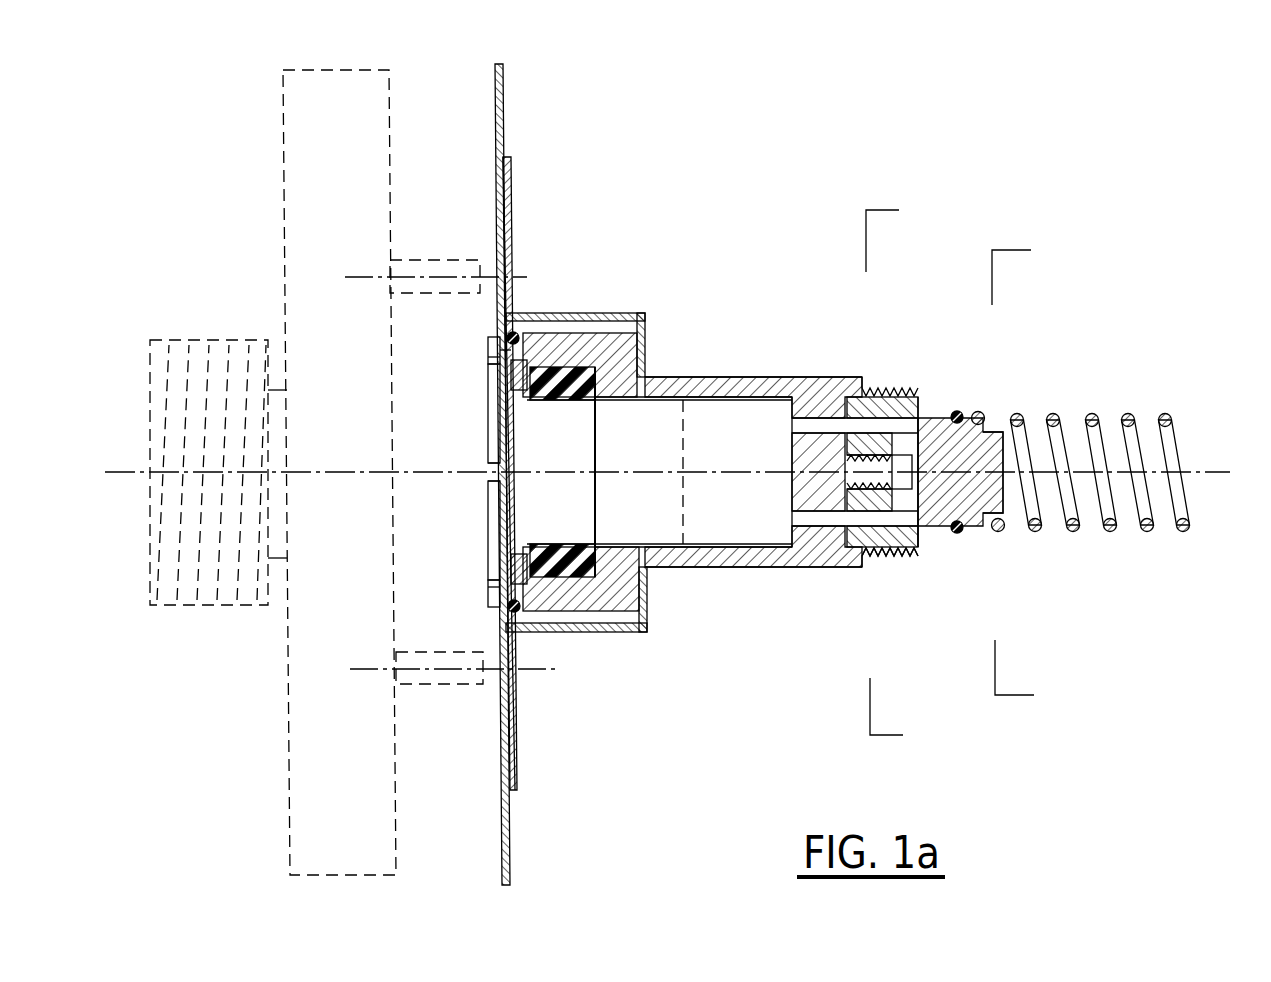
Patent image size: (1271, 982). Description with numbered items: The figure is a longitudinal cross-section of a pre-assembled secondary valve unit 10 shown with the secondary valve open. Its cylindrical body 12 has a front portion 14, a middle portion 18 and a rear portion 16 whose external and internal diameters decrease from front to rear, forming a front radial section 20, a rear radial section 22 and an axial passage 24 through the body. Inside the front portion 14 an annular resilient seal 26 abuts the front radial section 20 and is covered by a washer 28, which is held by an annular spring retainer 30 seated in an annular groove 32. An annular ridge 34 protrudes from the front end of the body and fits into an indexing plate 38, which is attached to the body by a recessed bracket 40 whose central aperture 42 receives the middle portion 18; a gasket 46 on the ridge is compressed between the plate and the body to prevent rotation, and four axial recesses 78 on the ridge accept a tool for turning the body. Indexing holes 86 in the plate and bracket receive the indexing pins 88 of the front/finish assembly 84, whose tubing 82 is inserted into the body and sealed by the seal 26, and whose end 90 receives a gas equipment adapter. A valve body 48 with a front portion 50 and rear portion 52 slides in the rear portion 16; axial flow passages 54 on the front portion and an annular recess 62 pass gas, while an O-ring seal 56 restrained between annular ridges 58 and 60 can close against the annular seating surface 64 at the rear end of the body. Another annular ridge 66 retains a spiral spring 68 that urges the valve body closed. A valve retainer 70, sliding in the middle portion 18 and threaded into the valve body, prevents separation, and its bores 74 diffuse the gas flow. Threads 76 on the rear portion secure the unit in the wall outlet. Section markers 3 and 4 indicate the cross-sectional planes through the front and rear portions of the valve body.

The section line 3 is at (896, 473).
The section line 4 is at (1025, 473).
The secondary valve unit 10 is at (724, 286).
The cylindrical body 12 is at (770, 375).
The front portion 14 is at (603, 313).
The rear portion 16 is at (880, 397).
The middle portion 18 is at (825, 377).
The front radial section 20 is at (648, 377).
The rear radial section 22 is at (866, 387).
The axial passage 24 is at (686, 378).
The annular resilient seal 26 is at (590, 345).
The washer 28 is at (550, 365).
The annular spring retainer 30 is at (511, 372).
The annular groove 32 is at (497, 350).
The annular ridge 34 is at (488, 437).
The indexing plate 38 is at (509, 74).
The recessed bracket 40 is at (517, 158).
The central aperture 42 is at (684, 400).
The gasket 46 is at (508, 330).
The valve body 48 is at (950, 394).
The front portion of valve body 50 is at (902, 405).
The rear portion of valve body 52 is at (980, 545).
The axial flow passages 54 is at (925, 396).
The O-ring seal 56 is at (985, 408).
The annular ridge 58 is at (953, 540).
The annular ridge 60 is at (994, 540).
The annular recess 62 is at (933, 542).
The annular seating surface 64 is at (913, 560).
The annular ridge 66 is at (1035, 548).
The spiral spring 68 is at (1093, 416).
The valve retainer 70 is at (805, 487).
The bores 74 is at (810, 518).
The threads 76 is at (895, 405).
The axial recesses 78 is at (490, 468).
The tubing 82 is at (405, 402).
The front/finish assembly 84 is at (263, 150).
The indexing holes 86 is at (500, 265).
The indexing pins 88 is at (410, 260).
The end 90 is at (183, 340).